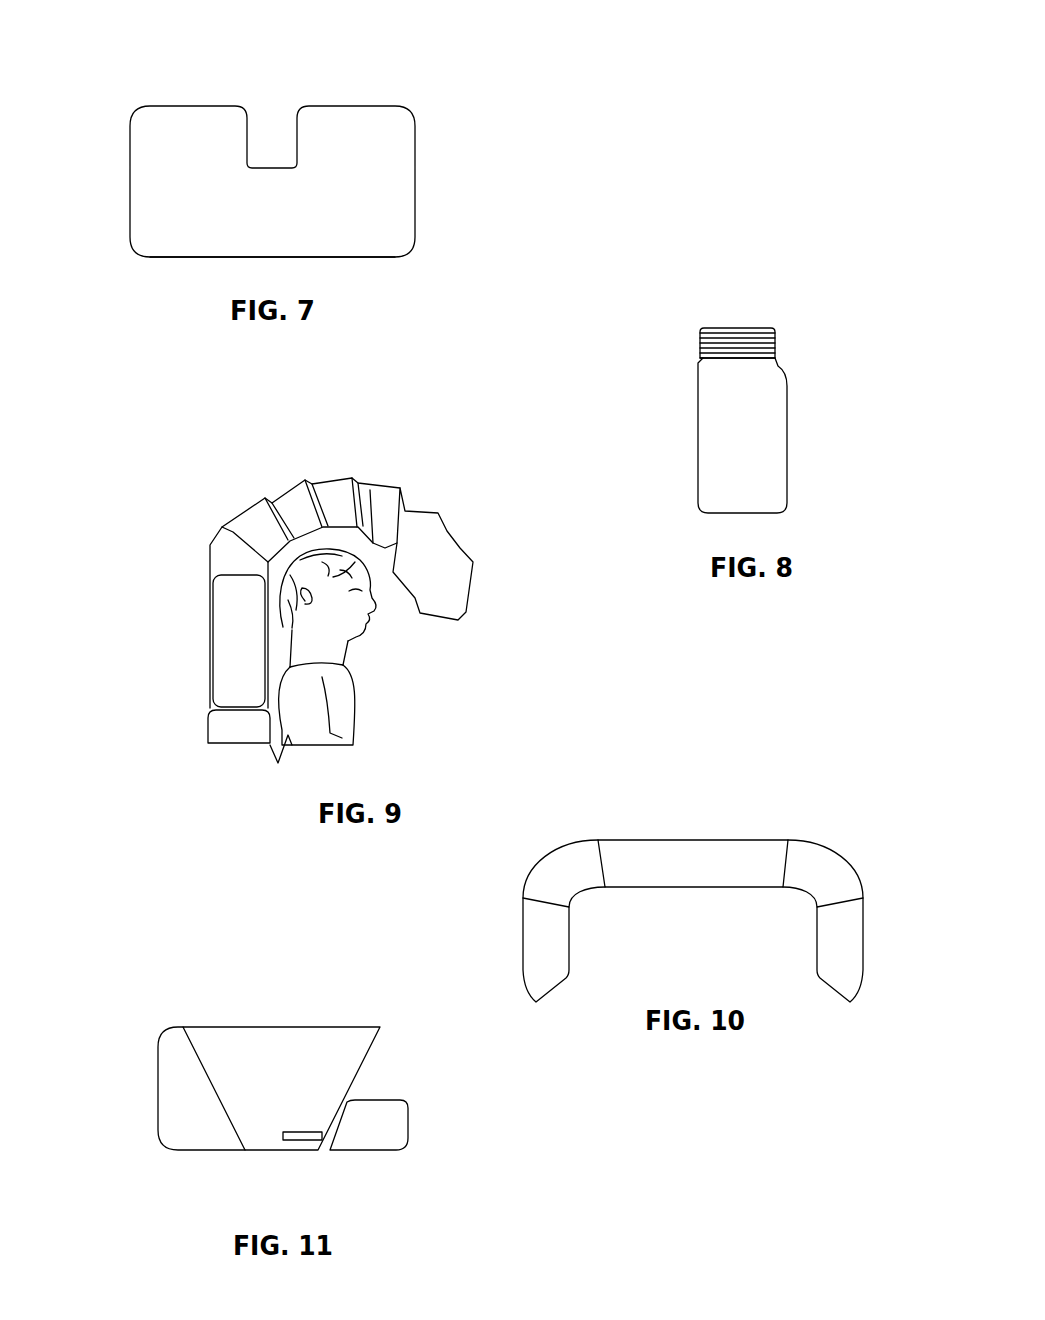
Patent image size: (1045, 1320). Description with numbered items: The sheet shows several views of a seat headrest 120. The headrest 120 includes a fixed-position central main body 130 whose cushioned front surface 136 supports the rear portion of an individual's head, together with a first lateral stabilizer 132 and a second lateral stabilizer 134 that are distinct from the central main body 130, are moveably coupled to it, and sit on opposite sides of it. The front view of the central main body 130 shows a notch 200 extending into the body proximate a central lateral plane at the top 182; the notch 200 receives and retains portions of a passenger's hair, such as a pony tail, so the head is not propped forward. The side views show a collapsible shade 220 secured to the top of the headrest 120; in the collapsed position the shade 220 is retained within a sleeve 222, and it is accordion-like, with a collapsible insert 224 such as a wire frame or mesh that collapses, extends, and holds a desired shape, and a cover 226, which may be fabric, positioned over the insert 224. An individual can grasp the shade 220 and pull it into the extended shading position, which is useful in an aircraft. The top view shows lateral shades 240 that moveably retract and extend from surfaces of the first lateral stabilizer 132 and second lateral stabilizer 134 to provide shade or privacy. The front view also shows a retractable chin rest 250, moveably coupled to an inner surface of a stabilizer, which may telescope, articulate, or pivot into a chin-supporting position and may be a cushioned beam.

In FIG. 7, the headrest 120 is at (113, 41).
In FIG. 8, the headrest 120 is at (658, 251).
In FIG. 9, the headrest 120 is at (178, 694).
In FIG. 11, the headrest 120 is at (165, 970).
In FIG. 7, the central main body 130 is at (397, 158).
In FIG. 8, the central main body 130 is at (790, 412).
In FIG. 10, the central main body 130 is at (693, 838).
In FIG. 11, the central main body 130 is at (283, 1027).
In FIG. 10, the first lateral stabilizer 132 is at (545, 860).
In FIG. 11, the first lateral stabilizer 132 is at (175, 1026).
In FIG. 10, the second lateral stabilizer 134 is at (843, 862).
In FIG. 11, the second lateral stabilizer 134 is at (408, 1113).
In FIG. 7, the front surface 136 is at (370, 215).
In FIG. 7, the top 182 is at (190, 104).
In FIG. 7, the notch 200 is at (270, 106).
In FIG. 8, the collapsible shade 220 is at (736, 324).
In FIG. 9, the collapsible shade 220 is at (432, 500).
In FIG. 8, the sleeve 222 is at (737, 322).
In FIG. 9, the sleeve 222 is at (198, 565).
In FIG. 8, the collapsible insert 224 is at (712, 336).
In FIG. 8, the cover 226 is at (700, 358).
In FIG. 9, the cover 226 is at (357, 485).
In FIG. 10, the lateral shades 240 is at (525, 942).
In FIG. 11, the retractable chin rest 250 is at (303, 1142).